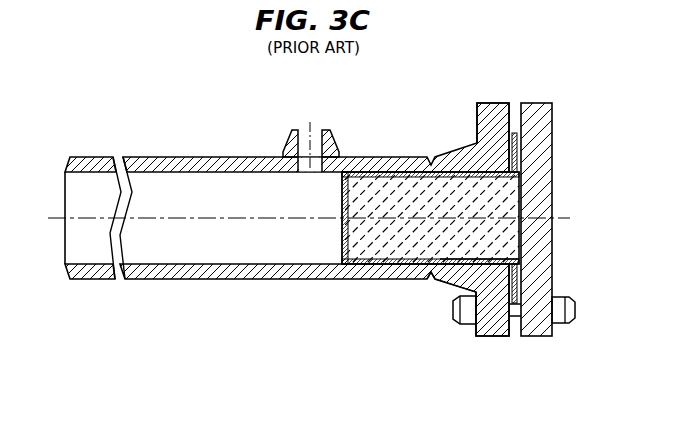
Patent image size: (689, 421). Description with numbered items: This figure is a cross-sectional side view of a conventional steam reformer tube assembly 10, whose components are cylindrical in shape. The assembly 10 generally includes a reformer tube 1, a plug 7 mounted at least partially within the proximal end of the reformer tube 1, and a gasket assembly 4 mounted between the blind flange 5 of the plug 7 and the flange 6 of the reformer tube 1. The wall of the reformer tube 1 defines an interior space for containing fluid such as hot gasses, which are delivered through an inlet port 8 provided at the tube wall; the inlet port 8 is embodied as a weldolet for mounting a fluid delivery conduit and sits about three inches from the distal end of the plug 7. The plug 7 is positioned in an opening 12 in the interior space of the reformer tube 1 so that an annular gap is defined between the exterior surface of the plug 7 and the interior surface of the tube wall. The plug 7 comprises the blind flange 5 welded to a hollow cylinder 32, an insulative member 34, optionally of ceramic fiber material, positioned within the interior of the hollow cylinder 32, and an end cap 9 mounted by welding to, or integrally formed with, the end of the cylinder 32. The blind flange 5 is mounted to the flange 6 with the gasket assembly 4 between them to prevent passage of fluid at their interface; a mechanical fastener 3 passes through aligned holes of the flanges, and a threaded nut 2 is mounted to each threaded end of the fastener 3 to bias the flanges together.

The reformer tube 1 is at (177, 157).
The threaded nut 2 is at (555, 297).
The mechanical fastener 3 is at (575, 310).
The gasket assembly 4 is at (533, 285).
The blind flange 5 is at (553, 192).
The flange 6 is at (492, 102).
The plug 7 is at (405, 277).
The inlet port 8 is at (327, 150).
The end cap 9 is at (337, 238).
The steam reformer tube assembly 10 is at (183, 102).
The opening 12 is at (515, 205).
The hollow cylinder 32 is at (427, 273).
The insulative member 34 is at (473, 250).